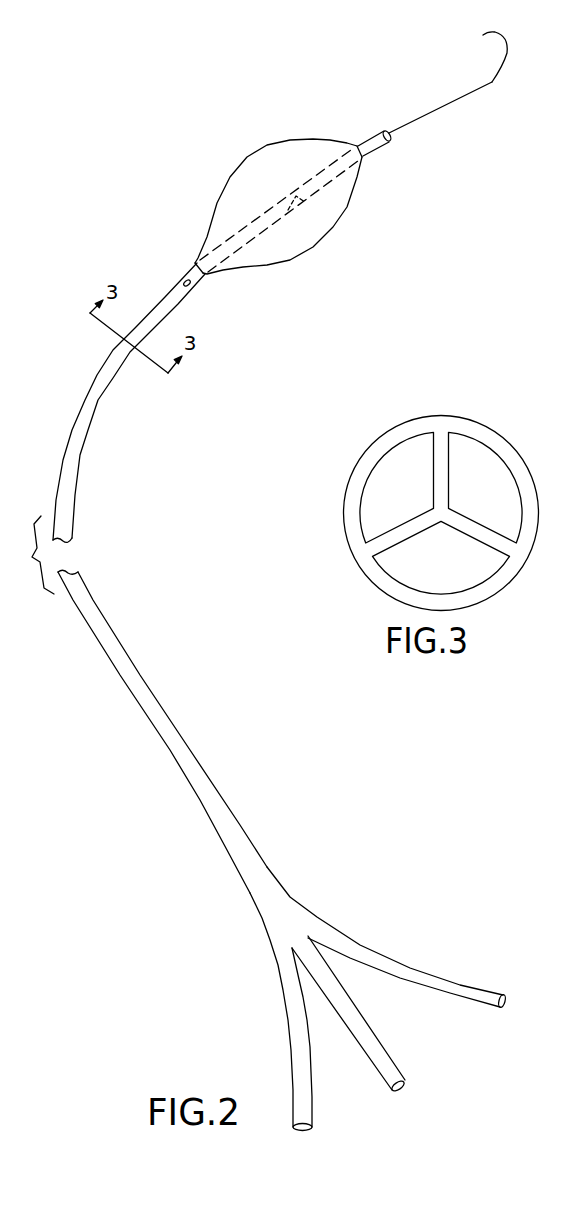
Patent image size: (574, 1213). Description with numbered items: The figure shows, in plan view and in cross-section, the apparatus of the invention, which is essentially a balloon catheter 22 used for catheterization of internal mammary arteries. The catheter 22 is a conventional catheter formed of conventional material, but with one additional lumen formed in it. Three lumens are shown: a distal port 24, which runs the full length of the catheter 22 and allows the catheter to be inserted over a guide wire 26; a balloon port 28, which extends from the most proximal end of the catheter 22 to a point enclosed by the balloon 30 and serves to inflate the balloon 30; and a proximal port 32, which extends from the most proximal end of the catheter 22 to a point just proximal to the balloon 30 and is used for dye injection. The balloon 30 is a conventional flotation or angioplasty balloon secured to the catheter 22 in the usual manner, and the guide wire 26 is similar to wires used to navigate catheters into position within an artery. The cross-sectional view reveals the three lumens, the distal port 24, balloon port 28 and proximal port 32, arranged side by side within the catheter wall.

In FIG. 2, the balloon catheter 22 is at (160, 168).
In FIG. 2, the distal port 24 is at (383, 128).
In FIG. 3, the distal port 24 is at (458, 567).
In FIG. 2, the guide wire 26 is at (495, 83).
In FIG. 2, the balloon port 28 is at (297, 205).
In FIG. 3, the balloon port 28 is at (411, 509).
In FIG. 2, the balloon 30 is at (278, 152).
In FIG. 2, the proximal port 32 is at (190, 286).
In FIG. 3, the proximal port 32 is at (496, 509).